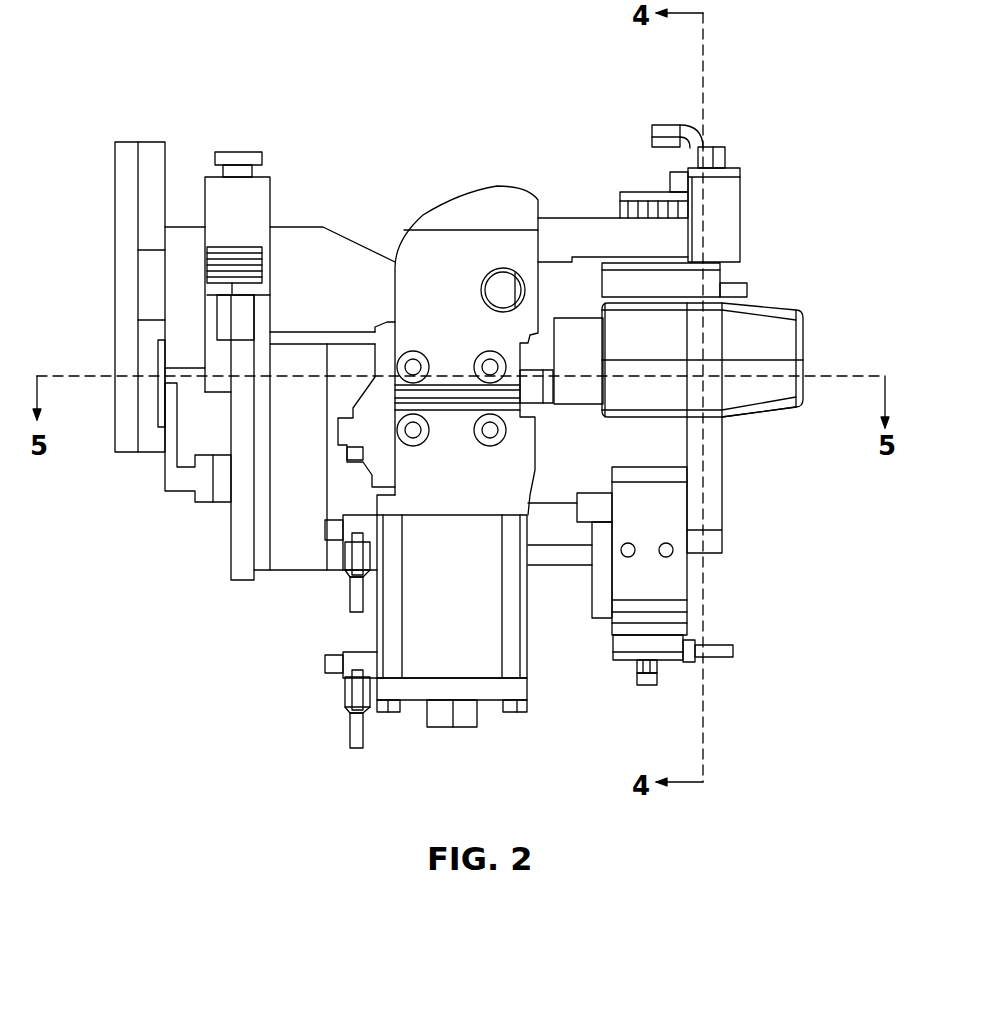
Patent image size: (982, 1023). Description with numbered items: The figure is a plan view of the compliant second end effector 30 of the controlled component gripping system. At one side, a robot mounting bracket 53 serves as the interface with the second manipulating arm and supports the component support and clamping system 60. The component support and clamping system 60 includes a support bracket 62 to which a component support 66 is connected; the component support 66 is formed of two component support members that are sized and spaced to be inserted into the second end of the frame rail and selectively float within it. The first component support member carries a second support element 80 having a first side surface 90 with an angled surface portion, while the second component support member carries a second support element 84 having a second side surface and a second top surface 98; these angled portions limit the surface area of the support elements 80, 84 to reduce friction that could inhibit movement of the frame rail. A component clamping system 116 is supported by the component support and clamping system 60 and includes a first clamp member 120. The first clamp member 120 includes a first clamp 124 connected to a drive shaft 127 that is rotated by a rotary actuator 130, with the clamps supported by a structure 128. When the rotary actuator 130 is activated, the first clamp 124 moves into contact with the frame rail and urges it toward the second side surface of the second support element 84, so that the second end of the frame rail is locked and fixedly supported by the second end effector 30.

The second end effector 30 is at (190, 40).
The robot mounting bracket 53 is at (124, 222).
The component support and clamping system 60 is at (487, 168).
The support bracket 62 is at (288, 238).
The component support 66 is at (807, 303).
The second support element 80 is at (806, 346).
The second support element 84 is at (753, 423).
The first side surface 90 is at (762, 330).
The second top surface 98 is at (778, 395).
The component clamping system 116 is at (455, 182).
The first clamp member 120 is at (423, 216).
The first clamp 124 is at (633, 283).
The drive shaft 127 is at (500, 292).
The structure 128 is at (663, 582).
The rotary actuator 130 is at (478, 637).